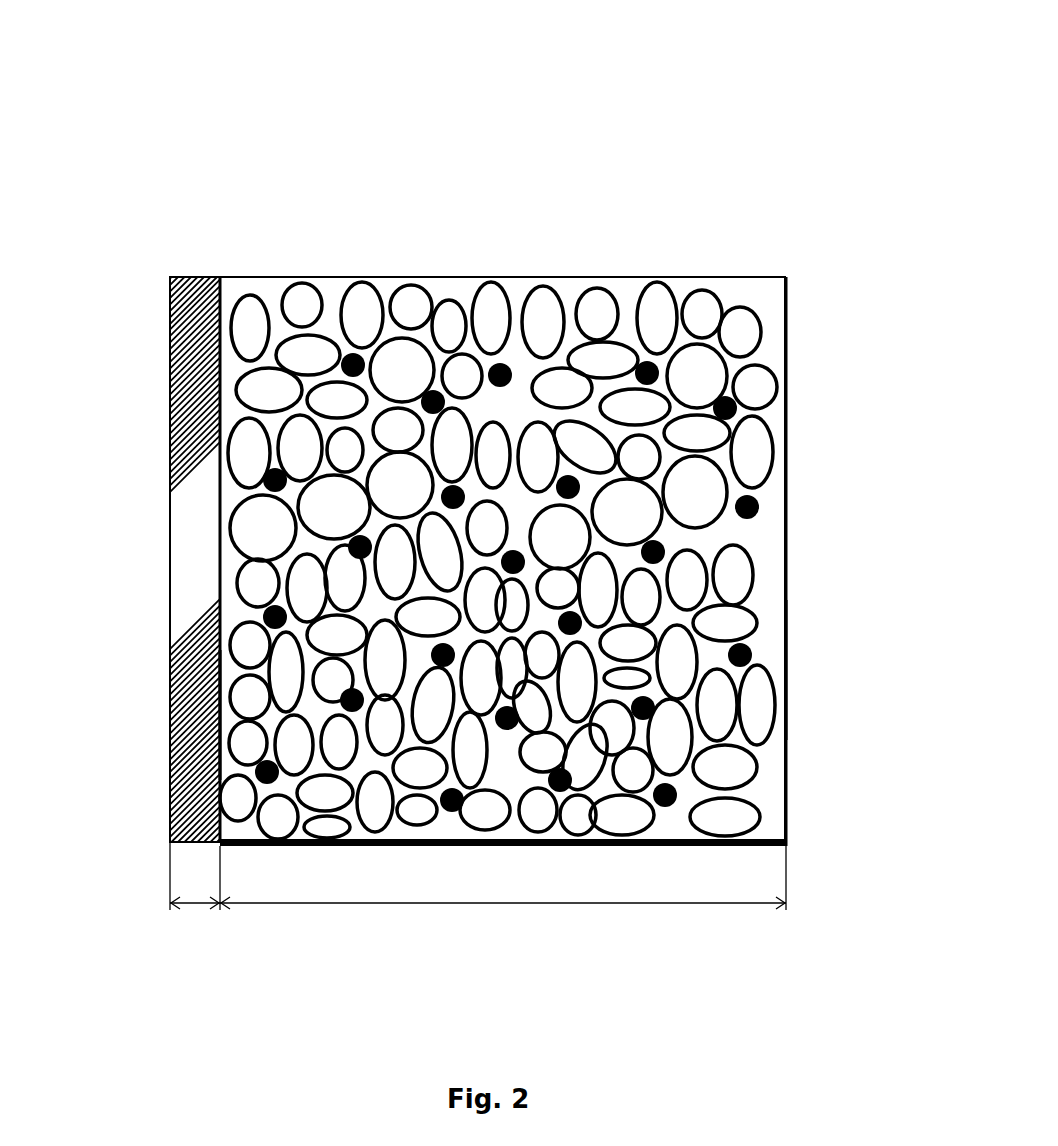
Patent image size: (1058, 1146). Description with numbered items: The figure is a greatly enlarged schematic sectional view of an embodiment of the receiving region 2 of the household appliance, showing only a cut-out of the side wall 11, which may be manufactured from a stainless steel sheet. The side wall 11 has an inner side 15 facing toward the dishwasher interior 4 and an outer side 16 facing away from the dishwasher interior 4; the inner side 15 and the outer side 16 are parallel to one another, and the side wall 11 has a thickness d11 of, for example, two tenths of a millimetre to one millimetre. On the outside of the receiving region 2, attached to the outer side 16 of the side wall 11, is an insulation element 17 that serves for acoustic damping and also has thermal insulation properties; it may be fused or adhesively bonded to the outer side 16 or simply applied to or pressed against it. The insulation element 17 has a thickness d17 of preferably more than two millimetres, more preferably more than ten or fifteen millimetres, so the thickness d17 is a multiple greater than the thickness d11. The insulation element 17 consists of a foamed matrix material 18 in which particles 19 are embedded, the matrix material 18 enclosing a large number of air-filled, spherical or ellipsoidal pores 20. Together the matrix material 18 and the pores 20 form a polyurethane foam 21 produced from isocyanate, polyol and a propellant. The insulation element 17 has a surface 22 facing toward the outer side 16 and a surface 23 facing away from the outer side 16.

The receiving region 2 is at (399, 106).
The dishwasher interior 4 is at (70, 537).
The side wall 11 is at (195, 277).
The inner side 15 is at (170, 632).
The outer side 16 is at (216, 713).
The insulation element 17 is at (600, 277).
The matrix material 18 is at (760, 303).
The particles 19 is at (758, 507).
The pores 20 is at (760, 368).
The polyurethane foam 21 is at (904, 312).
The surface 22 is at (280, 278).
The surface 23 is at (786, 667).
The thickness of the side wall d11 is at (195, 896).
The thickness of the insulation element d17 is at (503, 898).